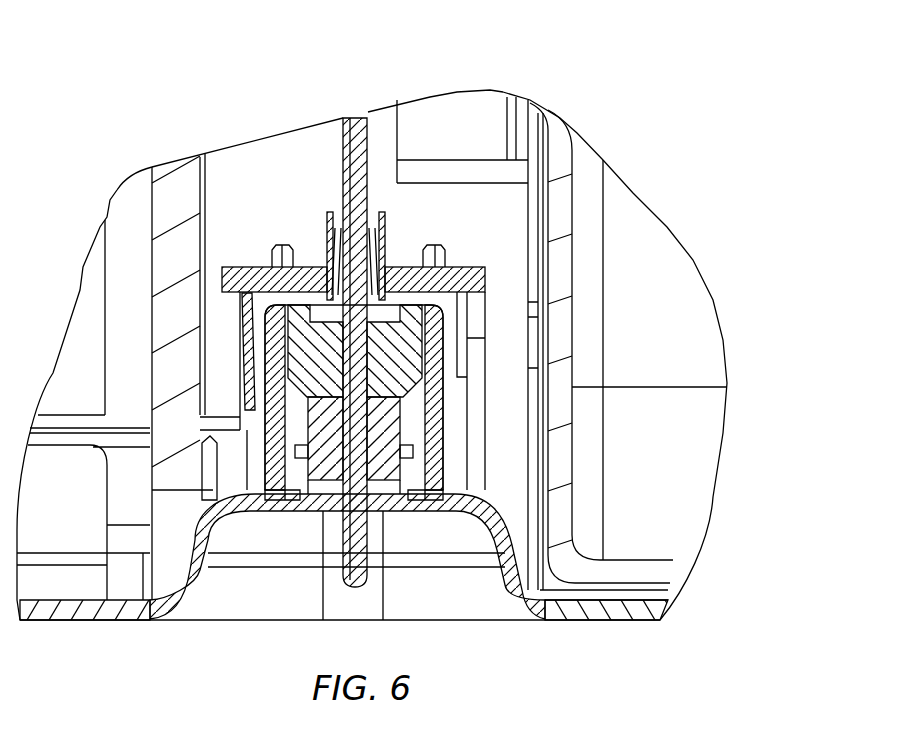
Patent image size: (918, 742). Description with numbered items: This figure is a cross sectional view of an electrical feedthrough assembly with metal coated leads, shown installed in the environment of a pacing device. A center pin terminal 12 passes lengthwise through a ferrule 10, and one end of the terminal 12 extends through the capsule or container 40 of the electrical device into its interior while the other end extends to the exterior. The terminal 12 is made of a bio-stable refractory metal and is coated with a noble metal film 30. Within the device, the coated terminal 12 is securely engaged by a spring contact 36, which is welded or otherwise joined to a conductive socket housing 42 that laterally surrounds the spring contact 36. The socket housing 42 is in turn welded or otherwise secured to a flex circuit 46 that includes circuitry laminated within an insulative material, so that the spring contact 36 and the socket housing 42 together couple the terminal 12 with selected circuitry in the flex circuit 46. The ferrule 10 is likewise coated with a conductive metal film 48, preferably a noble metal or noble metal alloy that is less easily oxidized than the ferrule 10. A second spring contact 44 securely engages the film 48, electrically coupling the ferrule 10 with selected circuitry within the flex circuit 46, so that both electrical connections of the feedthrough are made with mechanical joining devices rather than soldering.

The ferrule 10 is at (308, 500).
The terminal 12 is at (358, 118).
The noble metal film 30 is at (343, 118).
The spring contact 36 is at (384, 223).
The container 40 is at (140, 618).
The socket housing 42 is at (330, 213).
The spring contact 44 is at (443, 415).
The flex circuit 46 is at (238, 267).
The conductive metal film 48 is at (267, 500).